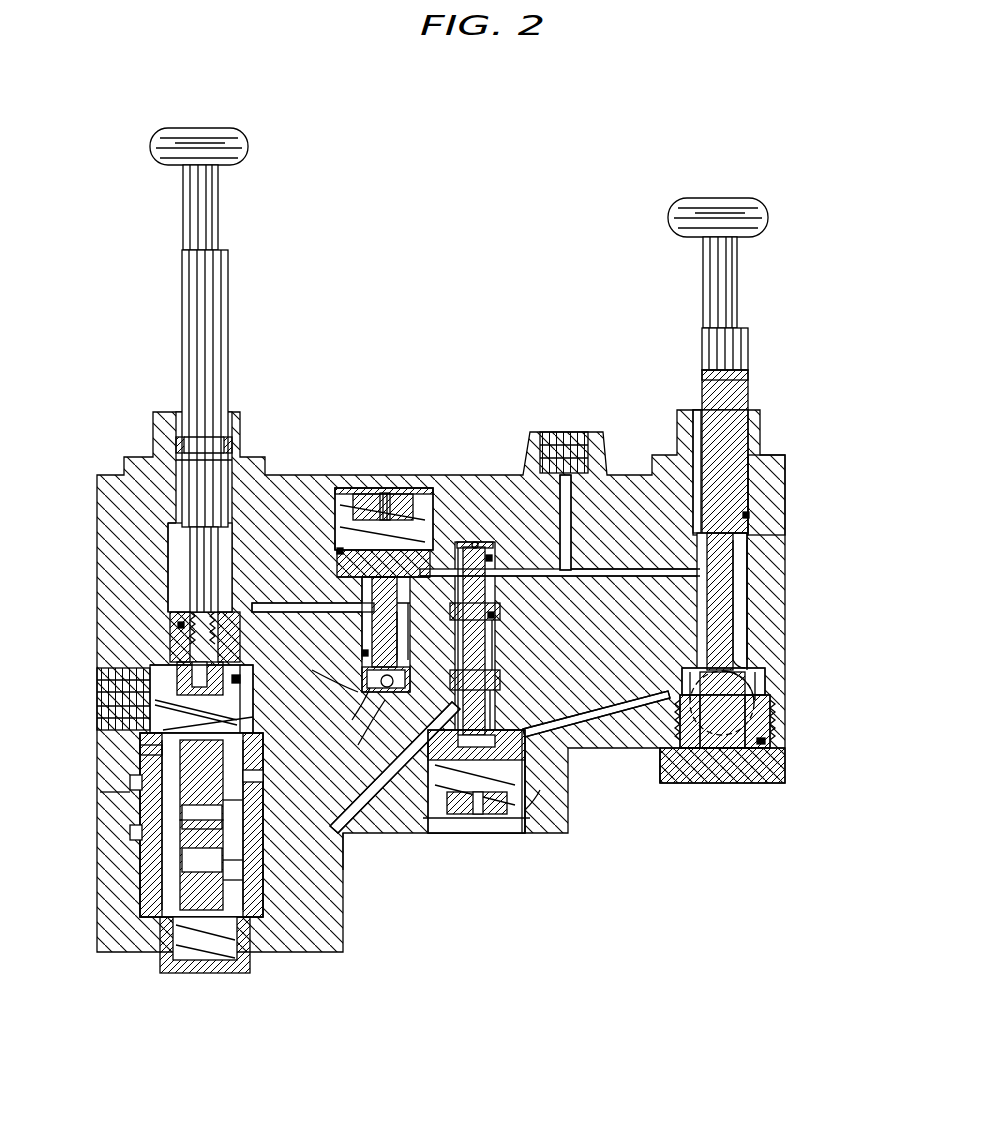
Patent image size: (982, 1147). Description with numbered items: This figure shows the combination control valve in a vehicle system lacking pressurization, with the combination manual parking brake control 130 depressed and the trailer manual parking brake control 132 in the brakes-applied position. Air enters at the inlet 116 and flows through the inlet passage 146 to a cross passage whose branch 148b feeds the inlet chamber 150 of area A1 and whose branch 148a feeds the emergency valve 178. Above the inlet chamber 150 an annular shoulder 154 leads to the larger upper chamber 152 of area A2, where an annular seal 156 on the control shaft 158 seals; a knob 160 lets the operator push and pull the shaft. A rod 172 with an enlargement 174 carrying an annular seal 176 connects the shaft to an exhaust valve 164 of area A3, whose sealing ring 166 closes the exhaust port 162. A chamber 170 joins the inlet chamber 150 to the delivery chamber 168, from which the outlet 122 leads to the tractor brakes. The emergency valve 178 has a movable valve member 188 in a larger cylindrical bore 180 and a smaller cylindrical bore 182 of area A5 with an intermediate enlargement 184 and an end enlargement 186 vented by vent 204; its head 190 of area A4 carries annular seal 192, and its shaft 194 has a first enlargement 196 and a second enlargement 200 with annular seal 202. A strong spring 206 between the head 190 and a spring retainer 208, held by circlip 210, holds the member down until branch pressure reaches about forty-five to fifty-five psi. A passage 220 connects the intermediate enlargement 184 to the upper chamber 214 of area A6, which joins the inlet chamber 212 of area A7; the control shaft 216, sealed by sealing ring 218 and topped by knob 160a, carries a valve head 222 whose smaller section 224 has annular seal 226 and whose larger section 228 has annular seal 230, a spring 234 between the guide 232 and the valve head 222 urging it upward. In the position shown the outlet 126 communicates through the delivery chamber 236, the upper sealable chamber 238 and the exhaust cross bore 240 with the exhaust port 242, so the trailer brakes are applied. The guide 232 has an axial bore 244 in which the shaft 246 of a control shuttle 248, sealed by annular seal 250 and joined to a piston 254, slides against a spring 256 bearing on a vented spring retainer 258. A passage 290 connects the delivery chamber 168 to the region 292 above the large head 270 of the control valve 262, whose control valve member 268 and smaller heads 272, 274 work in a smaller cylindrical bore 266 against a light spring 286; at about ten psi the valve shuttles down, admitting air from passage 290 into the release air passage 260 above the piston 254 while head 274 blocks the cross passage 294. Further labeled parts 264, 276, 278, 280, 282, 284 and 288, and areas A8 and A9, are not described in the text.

The inlet 116 is at (560, 437).
The outlet 122 is at (690, 720).
The outlet 126 is at (105, 676).
The combination manual parking brake control 130 is at (788, 360).
The trailer manual parking brake control 132 is at (70, 548).
The inlet passage 146 is at (572, 497).
The branch 148a is at (572, 576).
The branch 148b is at (648, 575).
The inlet chamber 150 is at (747, 585).
The upper chamber 152 is at (697, 470).
The annular shoulder 154 is at (747, 540).
The annular seal 156 is at (749, 517).
The control shaft 158 is at (735, 430).
The knob 160 is at (755, 205).
The knob 160a is at (240, 142).
The exhaust port 162 is at (745, 785).
The exhaust valve 164 is at (712, 755).
The annular sealing ring 166 is at (765, 758).
The delivery chamber 168 is at (765, 688).
The chamber 170 is at (747, 666).
The rod 172 is at (707, 612).
The enlargement 174 is at (745, 728).
The annular seal 176 is at (757, 703).
The emergency valve 178 is at (277, 520).
The larger cylindrical bore 180 is at (337, 515).
The smaller cylindrical bore 182 is at (366, 653).
The intermediate enlargement 184 is at (358, 622).
The end enlargement 186 is at (372, 686).
The movable valve member 188 is at (462, 470).
The head 190 is at (345, 575).
The annular seal 192 is at (340, 557).
The shaft 194 is at (408, 648).
The first enlargement 196 is at (392, 580).
The second enlargement 200 is at (357, 729).
The annular seal 202 is at (315, 671).
The vent 204 is at (349, 710).
The strong spring 206 is at (345, 520).
The spring retainer 208 is at (405, 495).
The circlip 210 is at (362, 494).
The inlet chamber 212 is at (182, 583).
The upper chamber 214 is at (178, 497).
The control shaft 216 is at (195, 302).
The sealing ring 218 is at (178, 440).
The passage 220 is at (265, 598).
The valve head 222 is at (80, 633).
The smaller section 224 is at (224, 636).
The annular seal 226 is at (178, 622).
The larger section 228 is at (243, 700).
The annular seal 230 is at (240, 680).
The guide 232 is at (140, 812).
The spring 234 is at (140, 750).
The delivery chamber 236 is at (170, 715).
The upper sealable chamber 238 is at (242, 757).
The exhaust cross bore 240 is at (145, 770).
The exhaust port 242 is at (140, 788).
The axial bore 244 is at (145, 832).
The shaft 246 is at (212, 831).
The control shuttle 248 is at (212, 873).
The annular seal 250 is at (243, 782).
The piston 254 is at (240, 866).
The spring 256 is at (172, 955).
The vented spring retainer 258 is at (250, 962).
The release air passage 260 is at (343, 858).
The control valve 262 is at (588, 805).
The passage 264 is at (532, 812).
The smaller cylindrical bore 266 is at (493, 640).
The control valve member 268 is at (490, 758).
The large head 270 is at (522, 755).
The smaller head 272 is at (418, 748).
The smaller head 274 is at (493, 605).
The bore 276 is at (490, 545).
The flange 278 is at (500, 692).
The seal 280 is at (492, 620).
The seal 282 is at (492, 562).
The vent 284 is at (473, 545).
The light spring 286 is at (432, 790).
The spring seat 288 is at (455, 820).
The passage 290 is at (660, 692).
The region 292 is at (500, 712).
The cross passage 294 is at (427, 612).
The cross sectional area A1 is at (747, 614).
The cross-sectional area A2 is at (752, 495).
The cross-sectional area A3 is at (692, 760).
The head area A4 is at (400, 548).
The area A5 is at (372, 600).
The cross-sectional area A6 is at (168, 517).
The cross-sectional area A7 is at (180, 568).
The area A8 is at (232, 816).
The area A9 is at (240, 882).